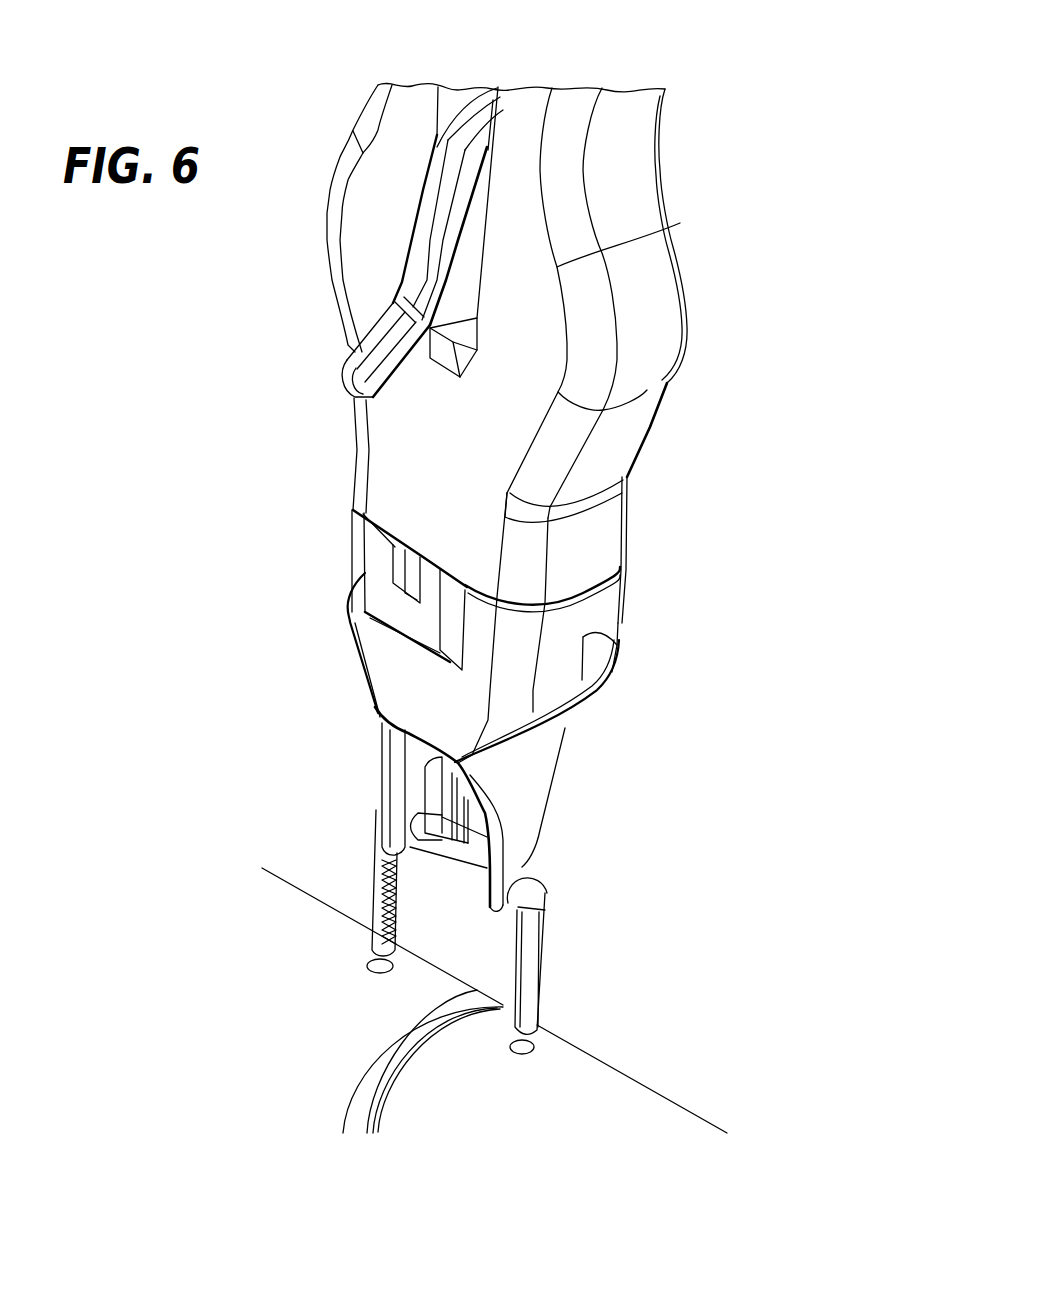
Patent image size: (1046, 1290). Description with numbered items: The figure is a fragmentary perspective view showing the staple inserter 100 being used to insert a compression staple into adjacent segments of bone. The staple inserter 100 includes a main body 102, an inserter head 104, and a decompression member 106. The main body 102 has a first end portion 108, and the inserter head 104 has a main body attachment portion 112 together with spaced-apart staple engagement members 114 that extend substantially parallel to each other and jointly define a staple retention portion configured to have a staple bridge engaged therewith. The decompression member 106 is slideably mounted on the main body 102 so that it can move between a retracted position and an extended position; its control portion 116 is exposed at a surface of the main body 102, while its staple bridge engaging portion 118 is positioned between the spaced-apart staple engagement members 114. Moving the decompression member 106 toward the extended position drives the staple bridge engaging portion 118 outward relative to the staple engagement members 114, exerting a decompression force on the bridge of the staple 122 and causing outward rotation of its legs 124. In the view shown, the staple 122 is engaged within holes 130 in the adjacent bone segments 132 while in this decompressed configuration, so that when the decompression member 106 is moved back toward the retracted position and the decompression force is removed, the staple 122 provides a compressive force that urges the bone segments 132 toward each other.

The staple inserter 100 is at (285, 104).
The main body 102 is at (672, 332).
The inserter head 104 is at (540, 733).
The decompression member 106 is at (423, 208).
The first end portion 108 is at (597, 530).
The main body attachment portion 112 is at (580, 605).
The spaced-apart staple engagement members 114 is at (392, 772).
The control portion 116 is at (370, 347).
The staple bridge engaging portion 118 is at (452, 811).
The staple 122 is at (543, 920).
The legs 124 is at (523, 968).
The holes 130 is at (540, 1047).
The bone segments 132 is at (625, 1103).